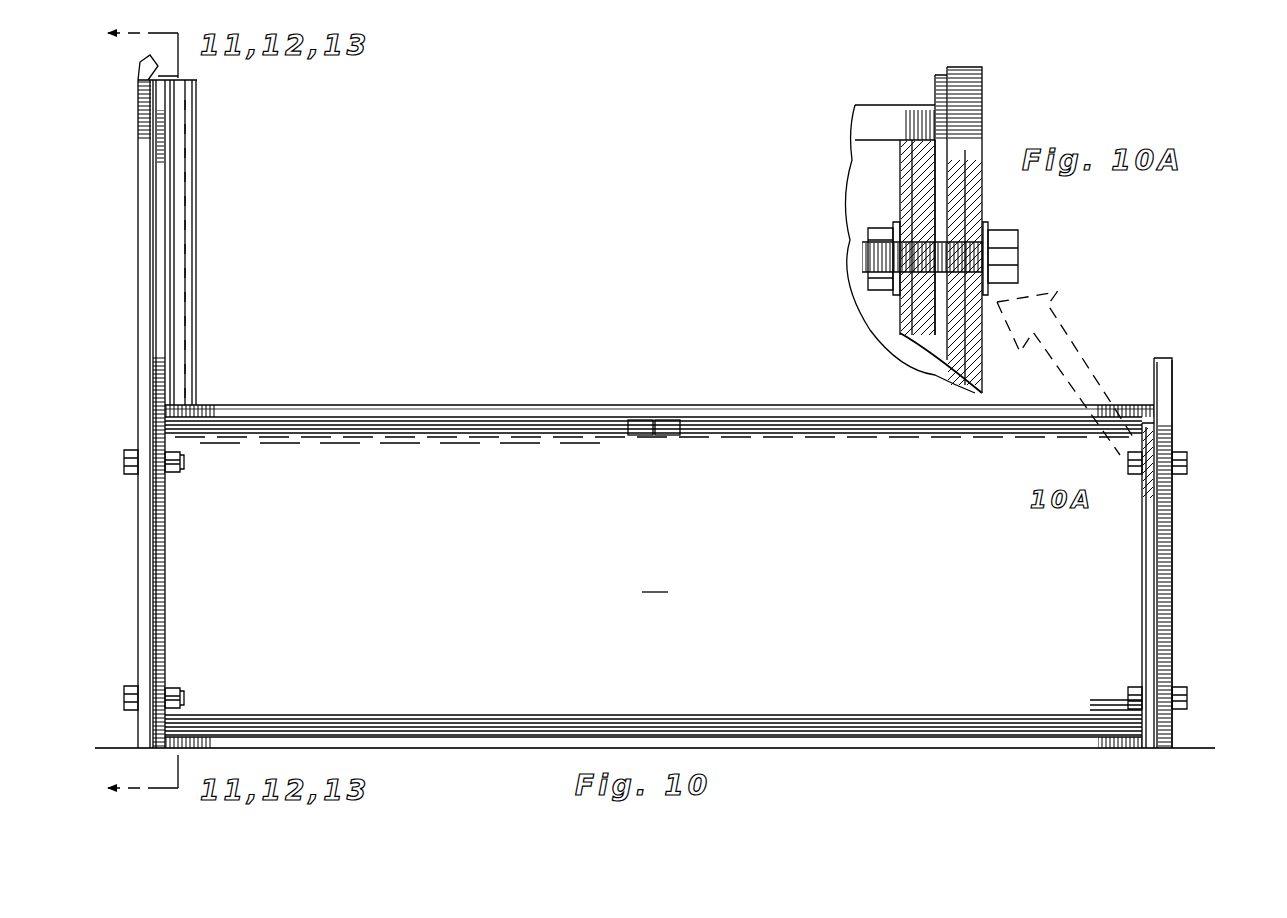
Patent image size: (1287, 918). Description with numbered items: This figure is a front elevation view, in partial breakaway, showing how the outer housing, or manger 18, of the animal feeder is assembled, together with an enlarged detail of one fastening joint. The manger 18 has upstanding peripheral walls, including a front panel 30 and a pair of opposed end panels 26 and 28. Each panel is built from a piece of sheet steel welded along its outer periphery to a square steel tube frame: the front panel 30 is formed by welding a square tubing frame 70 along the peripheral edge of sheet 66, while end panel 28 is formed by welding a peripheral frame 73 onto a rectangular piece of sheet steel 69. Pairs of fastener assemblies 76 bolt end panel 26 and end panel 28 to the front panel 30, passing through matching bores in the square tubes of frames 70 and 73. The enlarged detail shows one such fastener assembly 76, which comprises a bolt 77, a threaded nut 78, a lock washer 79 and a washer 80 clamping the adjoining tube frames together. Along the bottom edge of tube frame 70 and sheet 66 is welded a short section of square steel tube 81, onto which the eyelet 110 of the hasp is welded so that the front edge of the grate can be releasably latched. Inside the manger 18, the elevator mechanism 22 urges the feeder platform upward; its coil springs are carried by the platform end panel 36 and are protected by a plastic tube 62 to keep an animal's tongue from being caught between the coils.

In FIG. 10, the manger 18 is at (872, 665).
In FIG. 10, the elevator mechanism 22 is at (200, 126).
In FIG. 10, the end panel 26 is at (136, 298).
In FIG. 10, the end panel 28 is at (1176, 617).
In FIG. 10, the front panel 30 is at (656, 580).
In FIG. 10, the end panel 36 is at (158, 320).
In FIG. 10, the plastic tube 62 is at (178, 268).
In FIG. 10, the sheet steel 66 is at (398, 518).
In FIG. 10, the sheet steel 69 is at (1150, 395).
In FIG. 10A, the sheet steel 69 is at (937, 100).
In FIG. 10, the square tubing frame 70 is at (970, 420).
In FIG. 10A, the square tubing frame 70 is at (885, 122).
In FIG. 10, the peripheral frame 73 is at (1166, 362).
In FIG. 10A, the peripheral frame 73 is at (962, 75).
In FIG. 10, the fastener assembly 76 is at (122, 458).
In FIG. 10A, the fastener assembly 76 is at (1052, 263).
In FIG. 10A, the bolt 77 is at (1020, 258).
In FIG. 10A, the threaded nut 78 is at (873, 232).
In FIG. 10A, the lock washer 79 is at (1005, 228).
In FIG. 10A, the washer 80 is at (893, 290).
In FIG. 10, the square steel tube 81 is at (670, 434).
In FIG. 10, the eyelet 110 is at (642, 435).